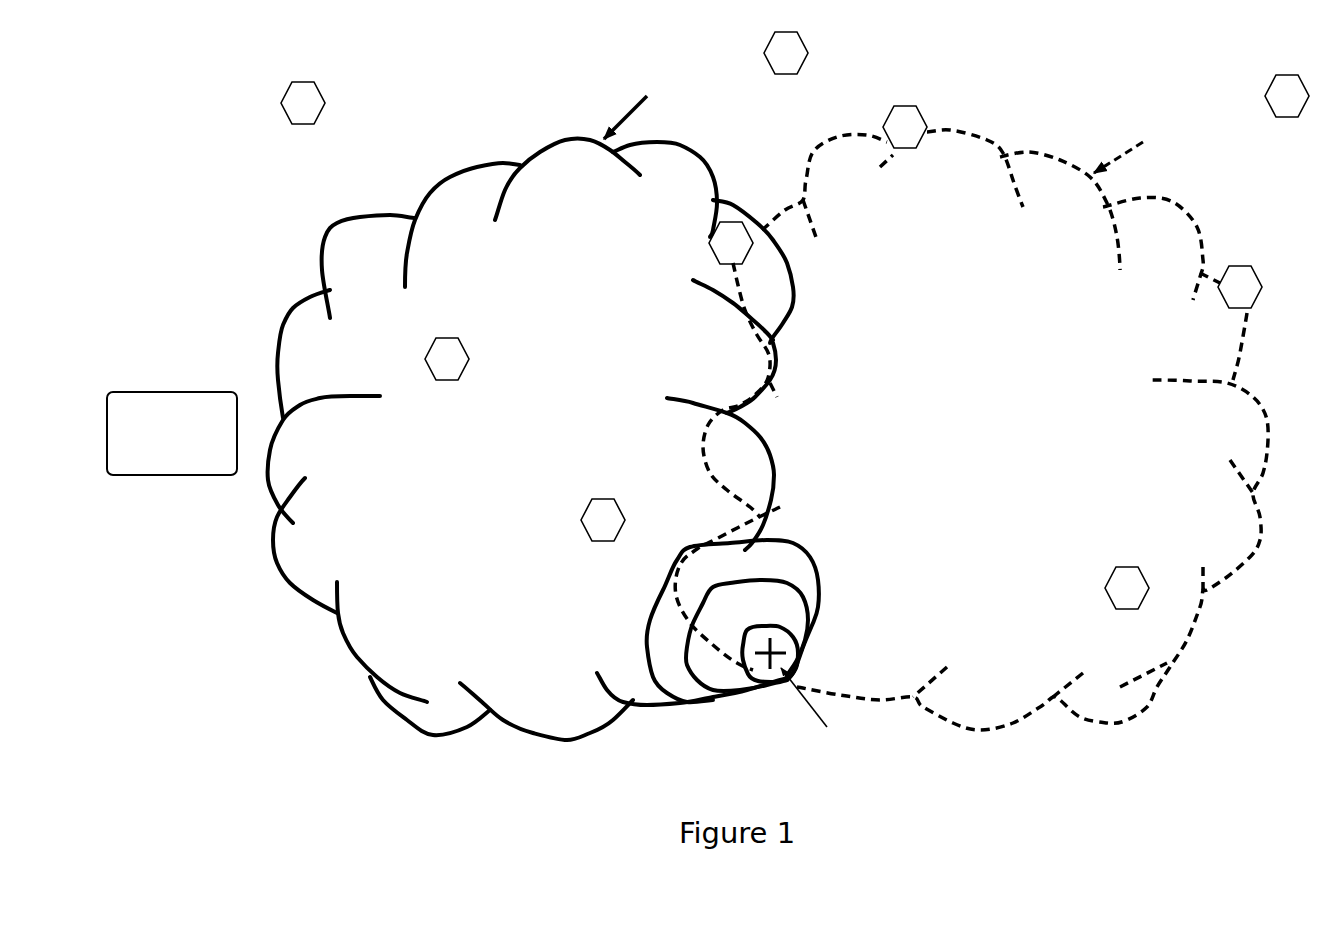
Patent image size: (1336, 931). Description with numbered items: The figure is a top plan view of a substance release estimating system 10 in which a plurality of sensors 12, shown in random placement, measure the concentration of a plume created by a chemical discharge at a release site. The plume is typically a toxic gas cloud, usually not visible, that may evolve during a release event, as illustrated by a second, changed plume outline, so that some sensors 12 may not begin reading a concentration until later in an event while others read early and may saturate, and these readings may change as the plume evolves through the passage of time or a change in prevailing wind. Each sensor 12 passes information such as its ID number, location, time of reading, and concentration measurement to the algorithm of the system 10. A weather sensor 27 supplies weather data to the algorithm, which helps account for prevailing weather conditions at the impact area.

The substance release estimating system 10 is at (781, 140).
The sensors 12 is at (807, 317).
The weather sensor 27 is at (172, 388).